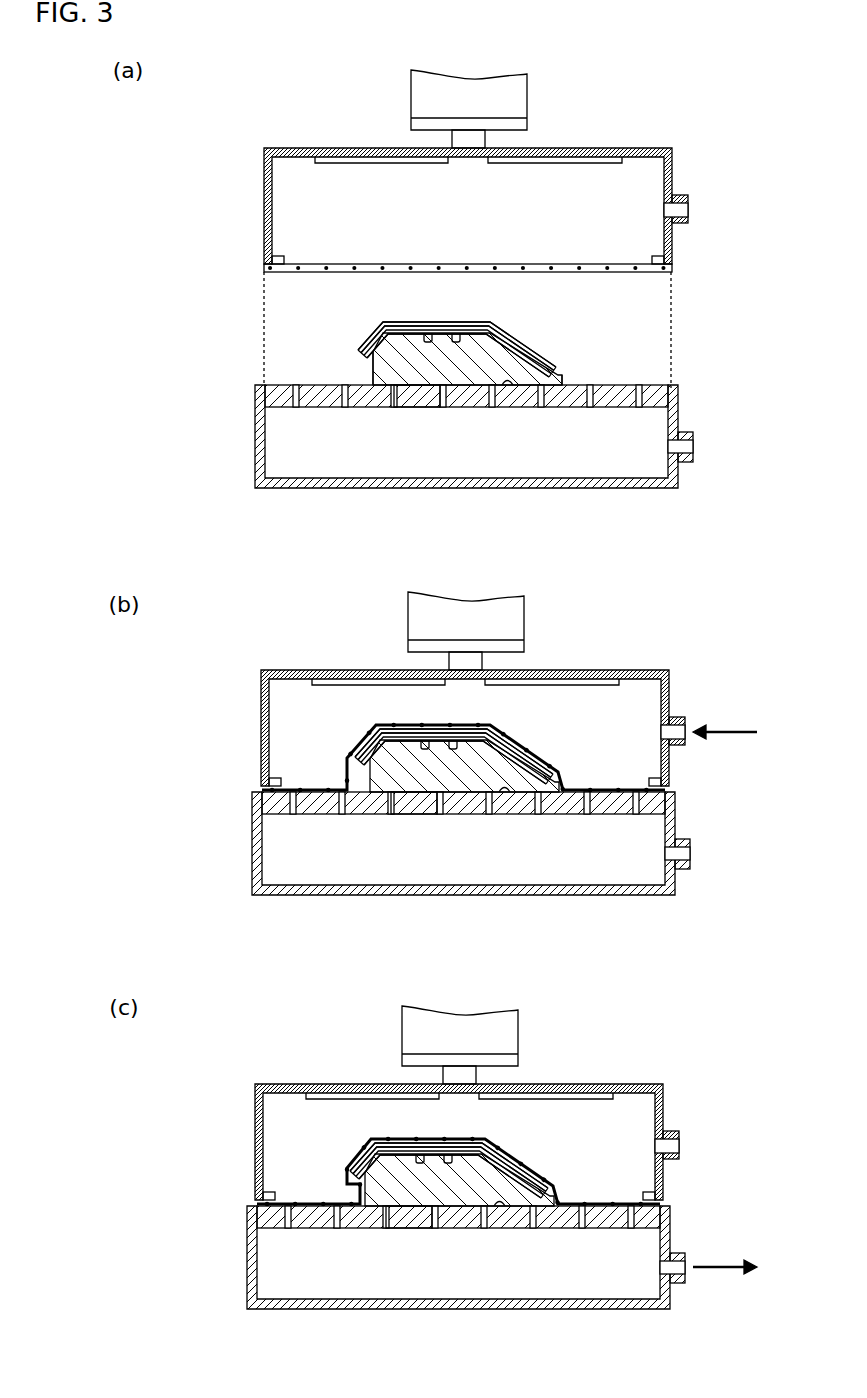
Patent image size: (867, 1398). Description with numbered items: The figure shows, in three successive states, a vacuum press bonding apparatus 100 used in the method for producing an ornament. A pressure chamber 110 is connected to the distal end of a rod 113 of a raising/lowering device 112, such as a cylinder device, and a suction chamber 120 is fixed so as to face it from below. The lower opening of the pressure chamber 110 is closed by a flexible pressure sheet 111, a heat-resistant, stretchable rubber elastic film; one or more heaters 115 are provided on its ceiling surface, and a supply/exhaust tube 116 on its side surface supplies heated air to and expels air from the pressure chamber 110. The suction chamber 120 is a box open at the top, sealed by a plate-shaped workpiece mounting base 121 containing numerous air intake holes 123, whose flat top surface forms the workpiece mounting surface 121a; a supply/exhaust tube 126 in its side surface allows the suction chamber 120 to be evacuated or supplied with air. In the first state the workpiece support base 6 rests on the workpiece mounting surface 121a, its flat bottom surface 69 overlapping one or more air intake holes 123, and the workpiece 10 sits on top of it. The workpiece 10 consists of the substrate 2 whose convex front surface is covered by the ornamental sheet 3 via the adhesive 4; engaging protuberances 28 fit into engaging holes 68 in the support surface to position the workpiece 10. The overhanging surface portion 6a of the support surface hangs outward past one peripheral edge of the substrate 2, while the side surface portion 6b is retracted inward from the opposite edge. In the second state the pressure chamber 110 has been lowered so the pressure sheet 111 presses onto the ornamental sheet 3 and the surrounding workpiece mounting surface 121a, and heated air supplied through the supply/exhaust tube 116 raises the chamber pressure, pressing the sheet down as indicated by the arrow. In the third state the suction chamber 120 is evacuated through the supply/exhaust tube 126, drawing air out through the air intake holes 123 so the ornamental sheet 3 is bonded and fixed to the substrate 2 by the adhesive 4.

The vacuum press bonding apparatus 100 is at (345, 118).
The pressure chamber 110 is at (262, 205).
The pressure sheet 111 is at (330, 270).
The raising/lowering device 112 is at (537, 86).
The rod 113 is at (478, 140).
The heaters 115 is at (373, 160).
The supply/exhaust tube 116 is at (690, 205).
The suction chamber 120 is at (250, 447).
The workpiece mounting base 121 is at (382, 402).
The workpiece mounting surface 121a is at (508, 400).
The air intake holes 123 is at (590, 405).
The supply/exhaust tube 126 is at (694, 447).
The workpiece support base 6 is at (478, 380).
The overhanging surface portion 6a is at (566, 372).
The side surface portion 6b is at (372, 362).
The bottom surface 69 is at (410, 400).
The engaging protuberances 28 is at (430, 338).
The engaging holes 68 is at (456, 340).
The workpiece 10 is at (530, 295).
The substrate 2 is at (534, 366).
The ornamental sheet 3 is at (506, 346).
The adhesive 4 is at (518, 356).